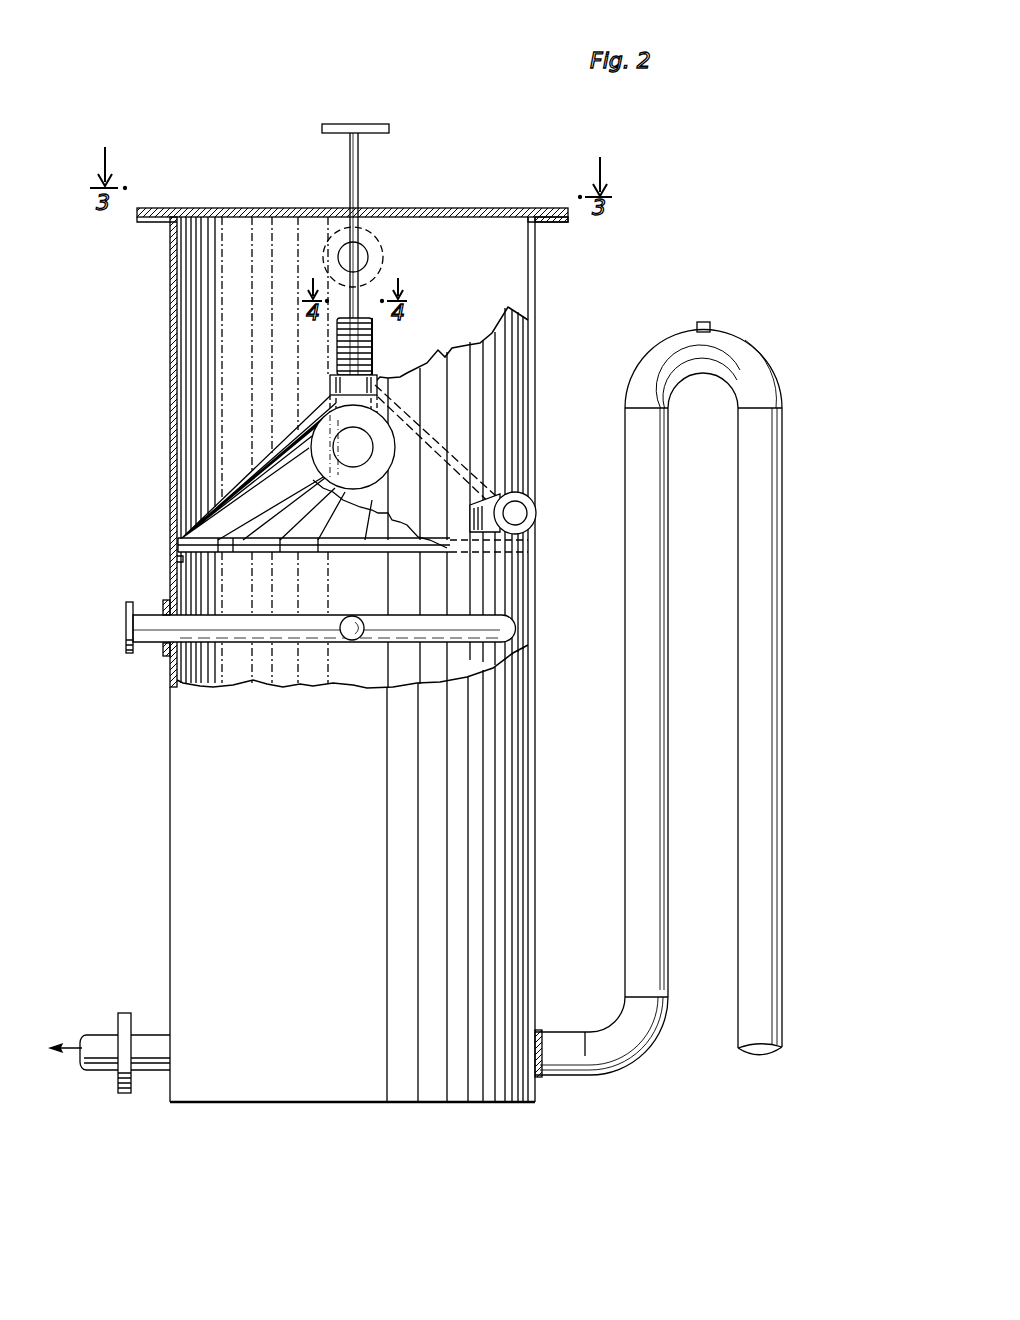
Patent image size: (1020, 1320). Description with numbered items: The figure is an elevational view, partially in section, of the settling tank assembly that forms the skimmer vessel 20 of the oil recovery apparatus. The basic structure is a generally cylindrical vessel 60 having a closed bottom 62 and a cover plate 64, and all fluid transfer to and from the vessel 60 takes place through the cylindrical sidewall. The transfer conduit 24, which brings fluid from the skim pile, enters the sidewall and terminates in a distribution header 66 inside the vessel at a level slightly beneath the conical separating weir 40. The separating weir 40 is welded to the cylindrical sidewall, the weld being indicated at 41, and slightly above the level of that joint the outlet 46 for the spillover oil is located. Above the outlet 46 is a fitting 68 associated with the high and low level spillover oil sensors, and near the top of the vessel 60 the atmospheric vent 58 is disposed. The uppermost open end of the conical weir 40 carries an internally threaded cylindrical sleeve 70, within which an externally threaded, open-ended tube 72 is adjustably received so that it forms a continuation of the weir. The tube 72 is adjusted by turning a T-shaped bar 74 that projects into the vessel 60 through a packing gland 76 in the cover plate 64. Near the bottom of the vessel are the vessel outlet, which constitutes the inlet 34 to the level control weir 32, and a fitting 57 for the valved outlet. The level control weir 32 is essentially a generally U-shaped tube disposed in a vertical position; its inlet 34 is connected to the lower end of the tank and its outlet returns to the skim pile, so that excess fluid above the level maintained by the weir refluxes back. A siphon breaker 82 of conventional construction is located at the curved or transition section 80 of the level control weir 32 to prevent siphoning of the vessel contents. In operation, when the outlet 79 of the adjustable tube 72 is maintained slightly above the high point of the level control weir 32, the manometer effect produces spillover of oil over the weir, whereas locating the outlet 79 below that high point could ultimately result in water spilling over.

The skimmer vessel 20 is at (588, 290).
The transfer conduit 24 is at (158, 632).
The level control weir assembly 32 is at (790, 352).
The inlet to the level control weir 34 is at (542, 1044).
The separating weir 40 is at (238, 458).
The weld 41 is at (190, 567).
The outlet for spillover oil 46 is at (527, 503).
The fitting for the valved outlet 57 is at (146, 1040).
The atmospheric vent 58 is at (338, 250).
The cylindrical vessel 60 is at (172, 768).
The closed bottom 62 is at (300, 1103).
The cover plate 64 is at (478, 207).
The distribution header 66 is at (497, 626).
The fitting 68 is at (342, 440).
The cylindrical sleeve 70 is at (332, 385).
The externally threaded open-ended tube 72 is at (338, 335).
The T-shaped bar 74 is at (357, 124).
The packing gland 76 is at (360, 212).
The outlet of the adjustable tube 79 is at (373, 294).
The curved or transition section 80 is at (704, 332).
The siphon breaker 82 is at (714, 313).